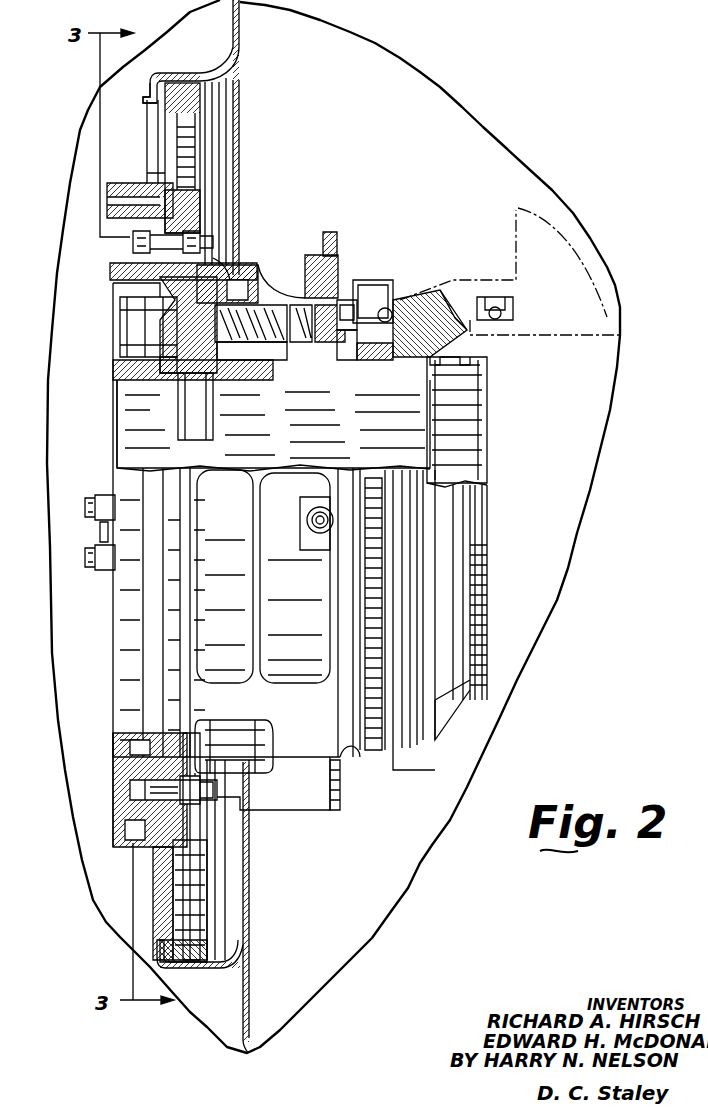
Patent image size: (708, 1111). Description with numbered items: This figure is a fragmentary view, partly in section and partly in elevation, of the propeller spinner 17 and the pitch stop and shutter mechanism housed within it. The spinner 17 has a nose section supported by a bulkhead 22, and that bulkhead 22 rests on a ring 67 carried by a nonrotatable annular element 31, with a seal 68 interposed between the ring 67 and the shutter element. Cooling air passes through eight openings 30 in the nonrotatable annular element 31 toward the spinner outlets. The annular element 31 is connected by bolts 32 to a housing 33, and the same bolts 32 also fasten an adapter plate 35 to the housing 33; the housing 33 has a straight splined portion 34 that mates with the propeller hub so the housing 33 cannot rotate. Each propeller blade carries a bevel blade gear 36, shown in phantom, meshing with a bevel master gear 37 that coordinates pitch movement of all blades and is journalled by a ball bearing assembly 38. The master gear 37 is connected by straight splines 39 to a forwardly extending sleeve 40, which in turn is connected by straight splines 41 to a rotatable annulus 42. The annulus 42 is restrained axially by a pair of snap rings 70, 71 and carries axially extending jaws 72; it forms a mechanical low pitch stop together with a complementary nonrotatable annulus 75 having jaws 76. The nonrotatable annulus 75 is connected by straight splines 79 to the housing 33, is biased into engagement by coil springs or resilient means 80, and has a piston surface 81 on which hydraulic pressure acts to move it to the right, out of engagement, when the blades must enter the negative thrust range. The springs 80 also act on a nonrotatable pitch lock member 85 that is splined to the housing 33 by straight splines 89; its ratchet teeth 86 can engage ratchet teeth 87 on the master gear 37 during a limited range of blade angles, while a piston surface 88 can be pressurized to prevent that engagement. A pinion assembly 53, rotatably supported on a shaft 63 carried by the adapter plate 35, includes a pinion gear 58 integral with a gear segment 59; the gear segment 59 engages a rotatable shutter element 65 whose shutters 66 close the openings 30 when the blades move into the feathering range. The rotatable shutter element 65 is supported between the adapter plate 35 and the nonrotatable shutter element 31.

The spinner 17 is at (450, 90).
The bulkhead 22 is at (240, 8).
The ring 67 is at (175, 78).
The openings 30 is at (170, 147).
The nonrotatable annular element 31 is at (195, 115).
The bolts 32 is at (135, 245).
The adapter plate 35 is at (110, 276).
The jaws 72 is at (200, 342).
The rotatable annulus 42 is at (140, 318).
The snap ring 70 is at (133, 352).
The piston surface 81 is at (245, 295).
The straight splines 79 is at (258, 290).
The snap ring 71 is at (245, 262).
The housing 33 is at (278, 290).
The resilient means 80 is at (300, 335).
The straight splines 89 is at (300, 290).
The nonrotatable pitch lock member 85 is at (337, 429).
The straight splines 41 is at (150, 378).
The jaws 76 is at (170, 378).
The nonrotatable annulus 75 is at (275, 365).
The piston surface 88 is at (345, 300).
The straight splined portion 34 is at (375, 295).
The ball bearing assembly 38 is at (395, 305).
The ratchet teeth 86 is at (345, 345).
The ratchet teeth 87 is at (365, 340).
The master gear 37 is at (420, 360).
The straight splines 39 is at (455, 360).
The sleeve 40 is at (460, 366).
The blade gear 36 is at (515, 212).
The pinion gear 58 is at (130, 760).
The shaft 63 is at (130, 790).
The pinion assembly 53 is at (125, 812).
The gear segment 59 is at (173, 860).
The shutters 66 is at (165, 905).
The rotatable shutter element 65 is at (175, 890).
The seal 68 is at (175, 945).